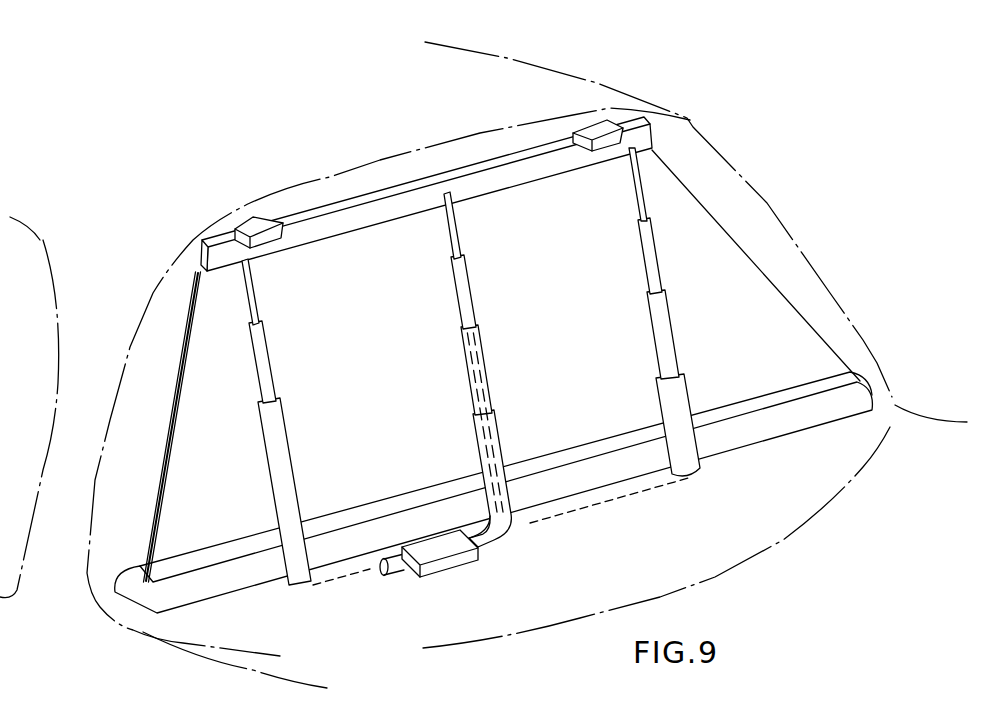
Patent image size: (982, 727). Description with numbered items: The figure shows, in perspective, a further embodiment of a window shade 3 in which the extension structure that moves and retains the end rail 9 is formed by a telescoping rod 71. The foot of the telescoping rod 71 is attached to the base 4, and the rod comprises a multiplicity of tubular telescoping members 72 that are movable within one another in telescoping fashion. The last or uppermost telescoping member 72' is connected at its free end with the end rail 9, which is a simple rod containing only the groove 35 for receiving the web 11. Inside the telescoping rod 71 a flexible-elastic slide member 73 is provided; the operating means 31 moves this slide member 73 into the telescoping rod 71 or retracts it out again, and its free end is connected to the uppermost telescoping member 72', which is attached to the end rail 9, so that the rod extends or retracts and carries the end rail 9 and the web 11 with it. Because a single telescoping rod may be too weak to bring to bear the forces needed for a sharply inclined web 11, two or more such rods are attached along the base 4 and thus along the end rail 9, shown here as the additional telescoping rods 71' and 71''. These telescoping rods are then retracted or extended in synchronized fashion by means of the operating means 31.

The window shade 3 is at (753, 216).
The base 4 is at (837, 407).
The end rail 9 is at (399, 188).
The web 11 is at (604, 272).
The operating means 31 is at (449, 558).
The groove 35 is at (200, 268).
The telescoping rod 71 is at (516, 385).
The telescoping rod 71' is at (694, 312).
The telescoping rod 71'' is at (307, 422).
The tubular telescoping members 72 is at (518, 478).
The uppermost telescoping member 72' is at (485, 225).
The flexible-elastic slide member 73 is at (469, 300).